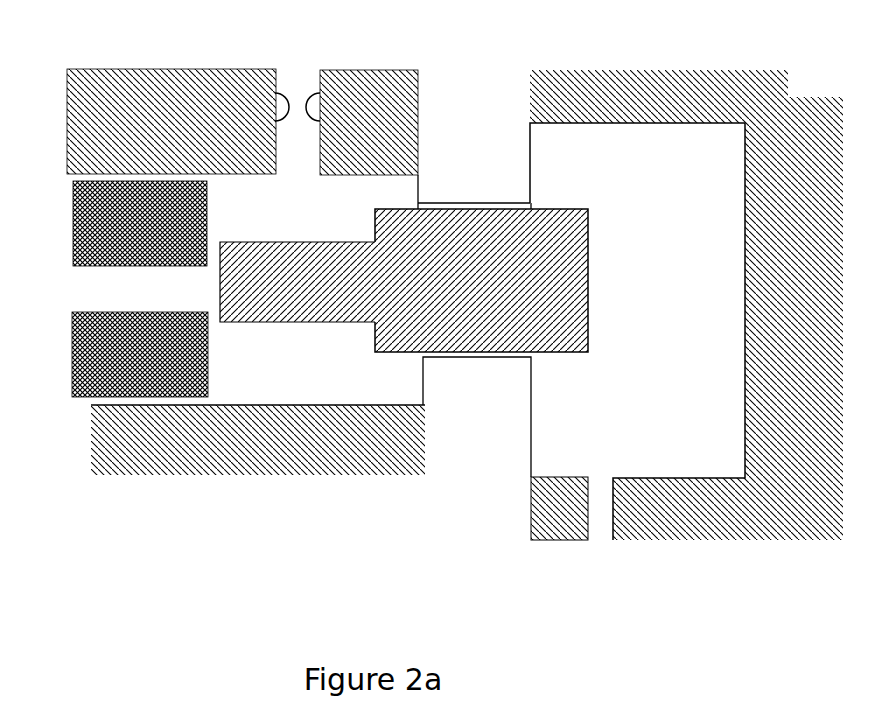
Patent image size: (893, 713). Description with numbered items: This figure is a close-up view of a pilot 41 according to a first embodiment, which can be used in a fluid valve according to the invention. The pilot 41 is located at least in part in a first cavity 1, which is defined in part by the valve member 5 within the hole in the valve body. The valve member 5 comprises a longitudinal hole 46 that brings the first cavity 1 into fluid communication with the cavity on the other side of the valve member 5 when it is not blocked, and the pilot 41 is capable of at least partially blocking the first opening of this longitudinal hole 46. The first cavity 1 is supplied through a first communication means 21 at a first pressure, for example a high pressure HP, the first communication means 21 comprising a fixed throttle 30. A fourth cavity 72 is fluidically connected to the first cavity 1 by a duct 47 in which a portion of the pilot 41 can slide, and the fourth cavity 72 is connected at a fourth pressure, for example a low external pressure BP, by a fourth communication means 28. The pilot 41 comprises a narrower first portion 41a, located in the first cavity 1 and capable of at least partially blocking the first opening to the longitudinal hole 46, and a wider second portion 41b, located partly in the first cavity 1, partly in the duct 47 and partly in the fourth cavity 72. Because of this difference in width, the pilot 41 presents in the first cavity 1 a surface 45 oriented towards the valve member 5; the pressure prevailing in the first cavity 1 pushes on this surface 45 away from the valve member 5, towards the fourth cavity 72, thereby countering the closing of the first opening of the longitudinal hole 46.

The first cavity 1 is at (270, 195).
The first communication means 21 is at (298, 160).
The fixed throttle 30 is at (295, 108).
The pilot 41 is at (404, 351).
The first portion of the pilot 41a is at (262, 298).
The second portion of the pilot 41b is at (572, 288).
The surface 45 is at (375, 342).
The longitudinal hole 46 is at (160, 290).
The duct 47 is at (469, 352).
The valve member 5 is at (142, 358).
The fourth communication means 28 is at (600, 507).
The fourth cavity 72 is at (700, 358).
The high pressure HP is at (298, 69).
The low external pressure BP is at (605, 529).